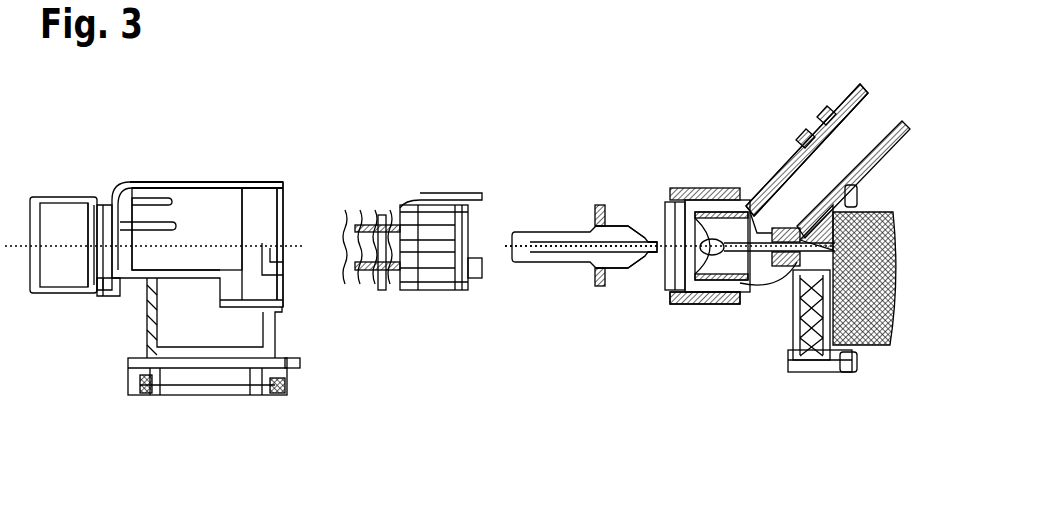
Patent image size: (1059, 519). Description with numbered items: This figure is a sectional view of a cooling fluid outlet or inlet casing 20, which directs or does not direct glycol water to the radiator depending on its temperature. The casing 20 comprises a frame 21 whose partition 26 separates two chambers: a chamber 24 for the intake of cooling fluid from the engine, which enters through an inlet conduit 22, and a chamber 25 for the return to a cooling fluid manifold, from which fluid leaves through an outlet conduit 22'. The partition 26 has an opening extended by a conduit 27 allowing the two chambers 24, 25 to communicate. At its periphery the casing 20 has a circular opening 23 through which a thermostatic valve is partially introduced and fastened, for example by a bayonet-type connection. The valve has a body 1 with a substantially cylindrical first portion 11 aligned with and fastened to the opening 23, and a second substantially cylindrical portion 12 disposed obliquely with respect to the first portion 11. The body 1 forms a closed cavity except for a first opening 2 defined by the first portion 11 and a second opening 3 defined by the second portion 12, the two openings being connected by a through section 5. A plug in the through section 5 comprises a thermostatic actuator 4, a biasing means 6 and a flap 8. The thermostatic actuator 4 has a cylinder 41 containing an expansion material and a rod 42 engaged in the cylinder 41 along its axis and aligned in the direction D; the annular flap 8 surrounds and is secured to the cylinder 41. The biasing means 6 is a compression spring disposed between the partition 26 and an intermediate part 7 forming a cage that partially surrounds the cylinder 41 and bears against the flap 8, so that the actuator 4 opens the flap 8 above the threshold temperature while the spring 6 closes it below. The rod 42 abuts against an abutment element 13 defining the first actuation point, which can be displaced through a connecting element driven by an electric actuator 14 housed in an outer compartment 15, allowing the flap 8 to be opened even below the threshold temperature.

The body 1 is at (731, 141).
The first opening 2 is at (656, 200).
The second opening 3 is at (863, 129).
The thermostatic actuator 4 is at (553, 295).
The through section 5 is at (811, 154).
The biasing means 6 is at (360, 198).
The intermediate part 7 is at (475, 208).
The flap 8 is at (590, 198).
The first portion 11 is at (722, 290).
The second portion 12 is at (770, 165).
The abutment element 13 is at (757, 276).
The electric actuator 14 is at (876, 359).
The outer compartment 15 is at (877, 260).
The casing 20 is at (198, 140).
The frame 21 is at (151, 172).
The inlet conduit 22 is at (259, 377).
The outlet conduit 22' is at (60, 295).
The circular opening 23 is at (300, 180).
The chamber 24 is at (187, 229).
The chamber 25 is at (67, 245).
The partition 26 is at (107, 293).
The conduit 27 is at (110, 232).
The cylinder 41 is at (617, 227).
The rod 42 is at (648, 265).
The direction D is at (506, 262).